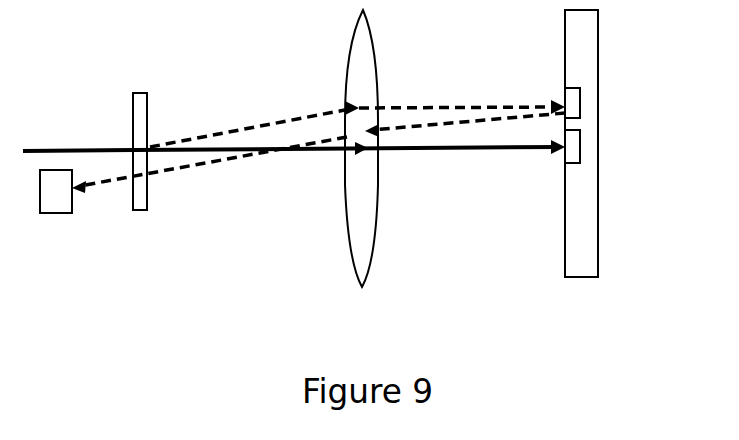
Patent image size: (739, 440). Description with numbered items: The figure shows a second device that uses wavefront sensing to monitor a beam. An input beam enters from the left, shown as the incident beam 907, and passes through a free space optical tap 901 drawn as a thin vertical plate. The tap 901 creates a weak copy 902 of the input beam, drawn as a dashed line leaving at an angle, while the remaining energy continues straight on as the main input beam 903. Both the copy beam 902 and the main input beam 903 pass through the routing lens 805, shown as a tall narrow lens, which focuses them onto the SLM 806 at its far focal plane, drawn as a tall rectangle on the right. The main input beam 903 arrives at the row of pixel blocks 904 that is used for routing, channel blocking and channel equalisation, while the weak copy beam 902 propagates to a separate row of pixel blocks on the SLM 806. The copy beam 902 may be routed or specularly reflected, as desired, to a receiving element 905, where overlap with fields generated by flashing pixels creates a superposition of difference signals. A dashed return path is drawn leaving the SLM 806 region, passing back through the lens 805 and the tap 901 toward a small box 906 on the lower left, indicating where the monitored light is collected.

The routing lens 805 is at (358, 72).
The SLM 806 is at (578, 60).
The free space optical tap 901 is at (140, 215).
The weak copy beams 902 is at (248, 125).
The main input beams 903 is at (433, 150).
The row of pixel blocks 904 is at (580, 110).
The receiving element 905 is at (582, 153).
The detector 906 is at (58, 192).
The incident light beam 907 is at (85, 148).